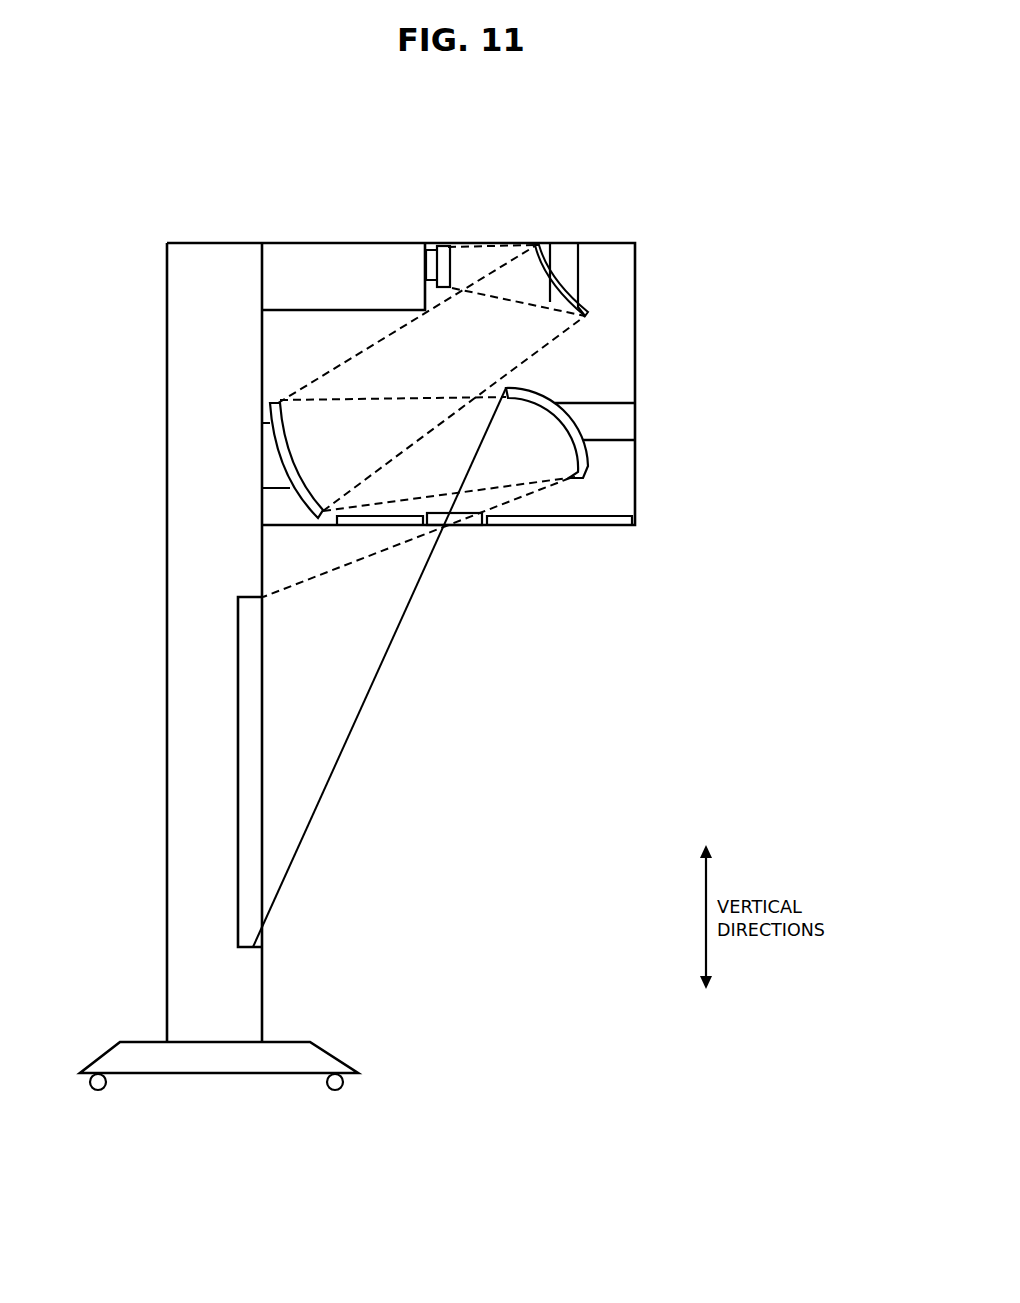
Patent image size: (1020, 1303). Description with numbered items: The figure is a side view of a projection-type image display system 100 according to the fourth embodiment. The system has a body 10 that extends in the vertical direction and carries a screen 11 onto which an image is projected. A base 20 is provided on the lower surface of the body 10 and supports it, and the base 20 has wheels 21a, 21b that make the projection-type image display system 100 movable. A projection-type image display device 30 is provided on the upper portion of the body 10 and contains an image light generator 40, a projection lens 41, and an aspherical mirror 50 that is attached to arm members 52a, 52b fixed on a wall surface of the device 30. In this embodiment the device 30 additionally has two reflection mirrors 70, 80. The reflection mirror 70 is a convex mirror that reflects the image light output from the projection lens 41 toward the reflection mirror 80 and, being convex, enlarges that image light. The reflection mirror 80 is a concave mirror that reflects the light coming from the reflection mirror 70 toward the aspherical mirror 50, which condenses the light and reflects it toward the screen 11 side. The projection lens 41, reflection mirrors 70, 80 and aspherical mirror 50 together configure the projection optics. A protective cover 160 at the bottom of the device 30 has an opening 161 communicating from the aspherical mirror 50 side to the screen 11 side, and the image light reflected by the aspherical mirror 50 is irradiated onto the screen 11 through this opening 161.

The projection-type image display system 100 is at (628, 198).
The body 10 is at (186, 449).
The screen 11 is at (250, 886).
The base 20 is at (317, 1058).
The wheel 21a is at (98, 1091).
The wheel 21b is at (335, 1091).
The projection-type image display device 30 is at (692, 260).
The image light generator 40 is at (350, 236).
The projection lens 41 is at (440, 245).
The aspherical mirror 50 is at (590, 457).
The arm member 52a is at (605, 403).
The arm member 52b is at (610, 440).
The reflection mirror 70 is at (588, 318).
The reflection mirror 80 is at (298, 506).
The protective cover 160 is at (560, 518).
The opening 161 is at (450, 527).